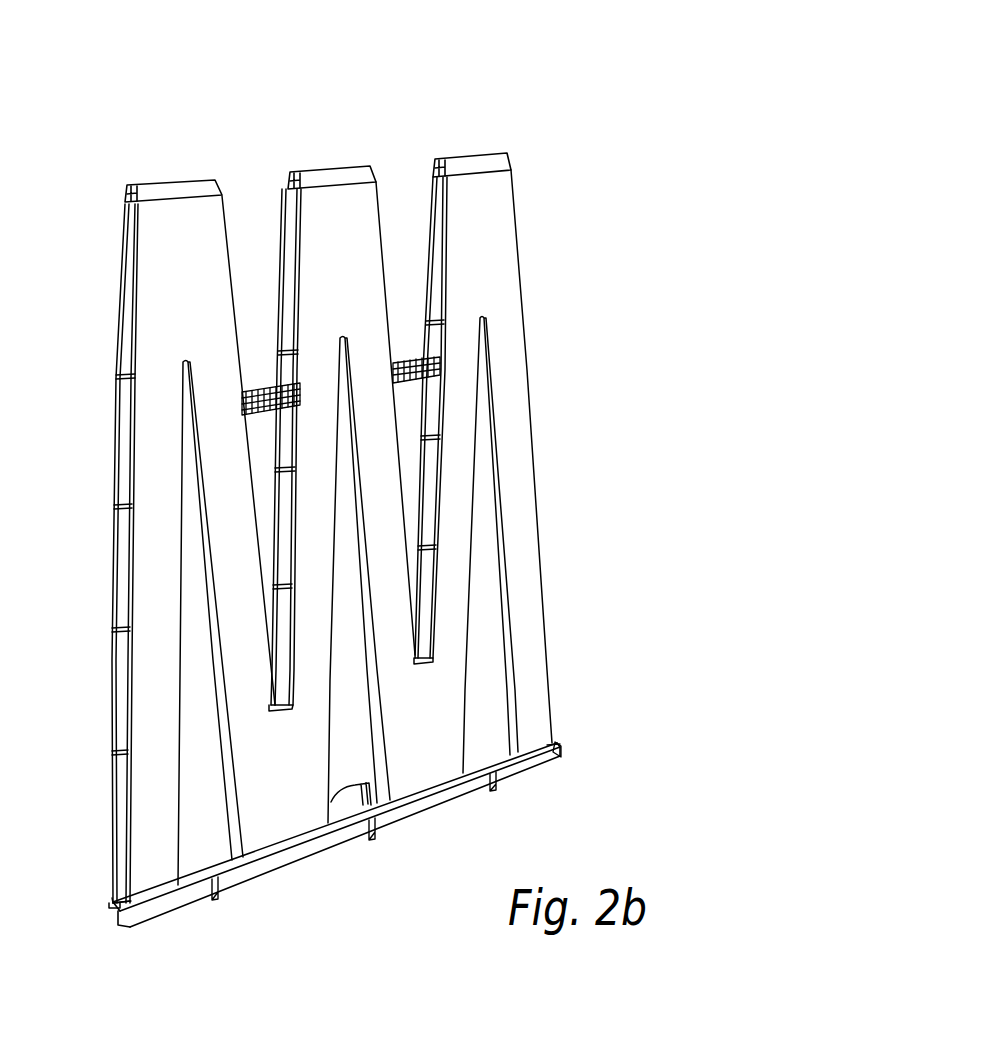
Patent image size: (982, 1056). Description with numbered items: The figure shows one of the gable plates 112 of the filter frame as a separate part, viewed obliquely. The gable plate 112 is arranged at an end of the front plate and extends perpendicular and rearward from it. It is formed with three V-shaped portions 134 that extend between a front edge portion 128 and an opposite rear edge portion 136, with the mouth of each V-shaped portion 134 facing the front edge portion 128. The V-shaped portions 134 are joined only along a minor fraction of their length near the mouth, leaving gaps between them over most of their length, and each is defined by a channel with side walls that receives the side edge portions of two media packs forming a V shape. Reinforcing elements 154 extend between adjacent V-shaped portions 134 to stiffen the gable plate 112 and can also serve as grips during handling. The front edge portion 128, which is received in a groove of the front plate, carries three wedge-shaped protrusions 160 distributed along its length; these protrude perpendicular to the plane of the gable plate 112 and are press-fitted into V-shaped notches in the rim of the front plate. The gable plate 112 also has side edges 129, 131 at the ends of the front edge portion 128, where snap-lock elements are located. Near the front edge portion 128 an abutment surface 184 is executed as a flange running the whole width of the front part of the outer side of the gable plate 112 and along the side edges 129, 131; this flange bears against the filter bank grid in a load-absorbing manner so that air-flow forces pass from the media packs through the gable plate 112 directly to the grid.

The gable plate 112 is at (395, 88).
The V-shaped portion 134 is at (160, 287).
The rear edge portion 136 is at (172, 188).
The reinforcing element 154 is at (267, 383).
The front edge portion 128 is at (328, 848).
The side edge 129 is at (563, 750).
The abutment surface 184 is at (558, 744).
The side edge 131 is at (120, 880).
The protrusion 160 is at (498, 777).